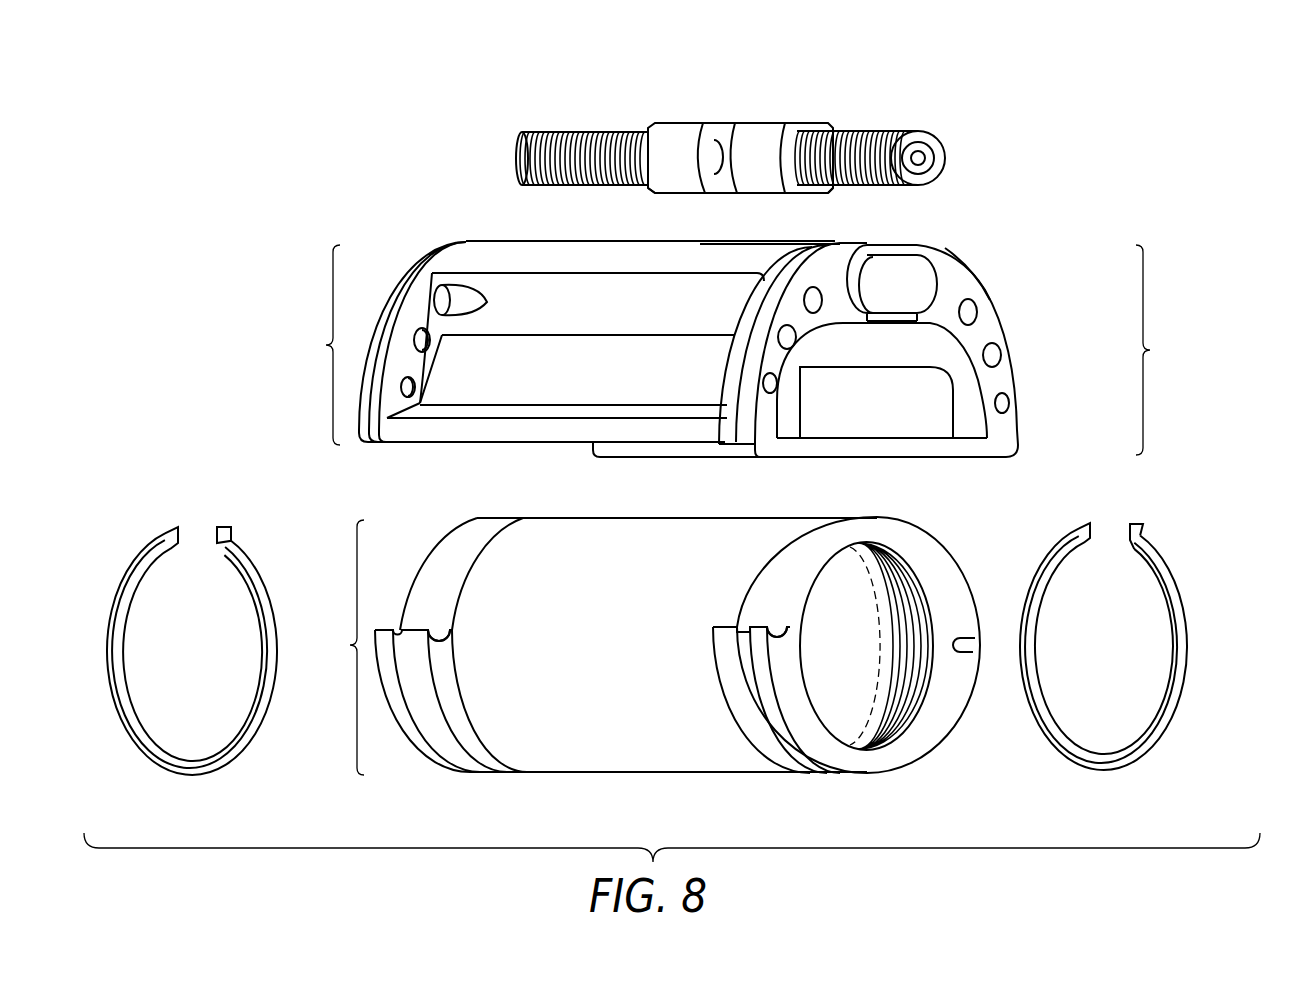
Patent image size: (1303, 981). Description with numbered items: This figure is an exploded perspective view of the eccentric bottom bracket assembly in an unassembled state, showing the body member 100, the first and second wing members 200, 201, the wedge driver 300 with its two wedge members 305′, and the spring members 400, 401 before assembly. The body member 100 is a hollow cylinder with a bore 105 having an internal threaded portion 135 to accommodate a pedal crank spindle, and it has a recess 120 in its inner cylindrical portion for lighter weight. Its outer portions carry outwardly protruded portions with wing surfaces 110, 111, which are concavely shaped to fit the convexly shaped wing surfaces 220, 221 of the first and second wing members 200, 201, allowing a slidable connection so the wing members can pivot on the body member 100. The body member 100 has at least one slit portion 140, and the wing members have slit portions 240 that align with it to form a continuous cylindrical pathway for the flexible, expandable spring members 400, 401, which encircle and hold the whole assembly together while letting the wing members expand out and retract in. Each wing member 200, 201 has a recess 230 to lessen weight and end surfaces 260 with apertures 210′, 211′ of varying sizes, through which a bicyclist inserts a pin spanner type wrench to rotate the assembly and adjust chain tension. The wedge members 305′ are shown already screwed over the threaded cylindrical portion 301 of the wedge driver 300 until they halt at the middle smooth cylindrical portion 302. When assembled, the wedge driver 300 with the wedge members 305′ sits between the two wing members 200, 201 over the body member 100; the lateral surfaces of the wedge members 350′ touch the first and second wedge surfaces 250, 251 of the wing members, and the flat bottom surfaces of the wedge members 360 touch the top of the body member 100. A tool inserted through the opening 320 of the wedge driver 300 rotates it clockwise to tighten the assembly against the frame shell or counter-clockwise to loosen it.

The body member 100 is at (641, 646).
The bore 105 is at (843, 655).
The wing surface of the body member 110 is at (783, 650).
The wing surface of the body member 111 is at (962, 640).
The recess 120 is at (592, 705).
The internal threaded portion 135 is at (907, 682).
The slit portion 140 is at (423, 718).
The first wing member 200 is at (559, 343).
The second wing member 201 is at (897, 350).
The aperture 210′ is at (820, 302).
The aperture 211′ is at (975, 313).
The wing surface 220 is at (375, 444).
The wing surface 221 is at (1010, 455).
The recess 230 is at (552, 383).
The slit portion 240 is at (450, 245).
The first wedge surface 250 is at (880, 278).
The second wedge surface 251 is at (918, 290).
The end surface 260 is at (958, 272).
The wedge driver 300 is at (516, 157).
The threaded cylindrical portion 301 is at (550, 140).
The smooth cylindrical portion 302 is at (716, 150).
The wedge member 305′ is at (660, 138).
The opening 320 is at (925, 152).
The lateral surface of the wedge member 350′ is at (687, 150).
The flat bottom surface of the wedge member 360 is at (676, 198).
The first spring member 400 is at (118, 730).
The second spring member 401 is at (1185, 712).